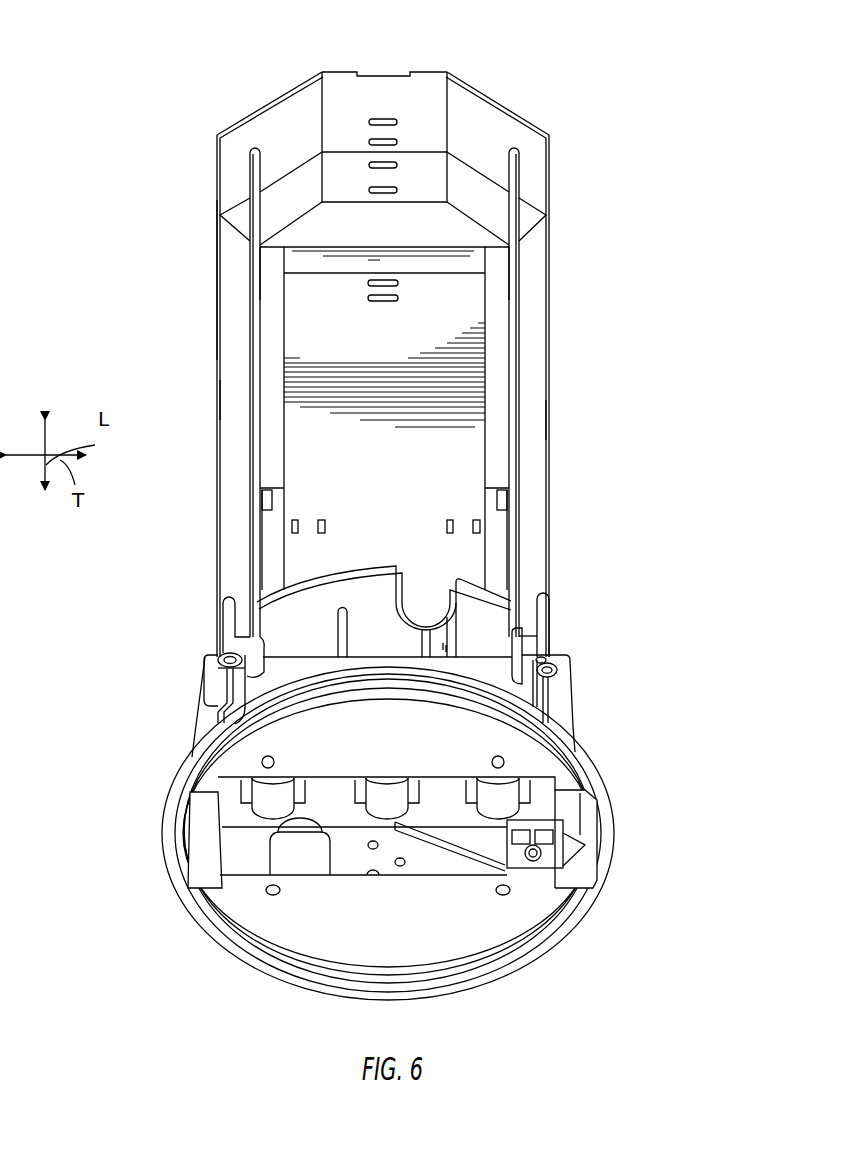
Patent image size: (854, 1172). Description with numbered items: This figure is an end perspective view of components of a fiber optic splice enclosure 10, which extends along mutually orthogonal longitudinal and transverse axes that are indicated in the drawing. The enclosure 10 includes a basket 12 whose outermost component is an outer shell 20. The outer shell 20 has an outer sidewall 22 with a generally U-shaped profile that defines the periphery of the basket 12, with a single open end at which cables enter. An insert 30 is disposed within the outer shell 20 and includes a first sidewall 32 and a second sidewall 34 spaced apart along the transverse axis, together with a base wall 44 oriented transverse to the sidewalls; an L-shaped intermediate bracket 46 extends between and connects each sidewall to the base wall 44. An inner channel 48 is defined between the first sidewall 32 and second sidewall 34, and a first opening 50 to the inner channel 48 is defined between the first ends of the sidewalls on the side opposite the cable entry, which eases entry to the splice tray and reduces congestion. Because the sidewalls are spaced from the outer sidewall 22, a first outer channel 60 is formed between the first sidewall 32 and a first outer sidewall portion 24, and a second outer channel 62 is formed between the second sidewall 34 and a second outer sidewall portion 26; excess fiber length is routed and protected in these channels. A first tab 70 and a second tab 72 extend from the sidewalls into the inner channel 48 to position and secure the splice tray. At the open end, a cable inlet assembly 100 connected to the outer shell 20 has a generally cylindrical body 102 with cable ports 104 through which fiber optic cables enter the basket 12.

The fiber optic splice enclosure 10 is at (712, 98).
The basket 12 is at (615, 207).
The outer shell 20 is at (549, 117).
The outer sidewall 22 is at (554, 181).
The first outer sidewall portion 24 is at (218, 200).
The second outer sidewall portion 26 is at (548, 212).
The insert 30 is at (532, 307).
The first sidewall 32 is at (248, 348).
The second sidewall 34 is at (511, 340).
The base wall 44 is at (440, 486).
The intermediate bracket 46 is at (270, 537).
The inner channel 48 is at (384, 418).
The first opening 50 is at (449, 206).
The first outer channel 60 is at (236, 396).
The second outer channel 62 is at (532, 420).
The first tab 70 is at (270, 302).
The second tab 72 is at (495, 270).
The cable inlet assembly 100 is at (642, 677).
The body 102 is at (470, 728).
The cable port 104 is at (300, 867).